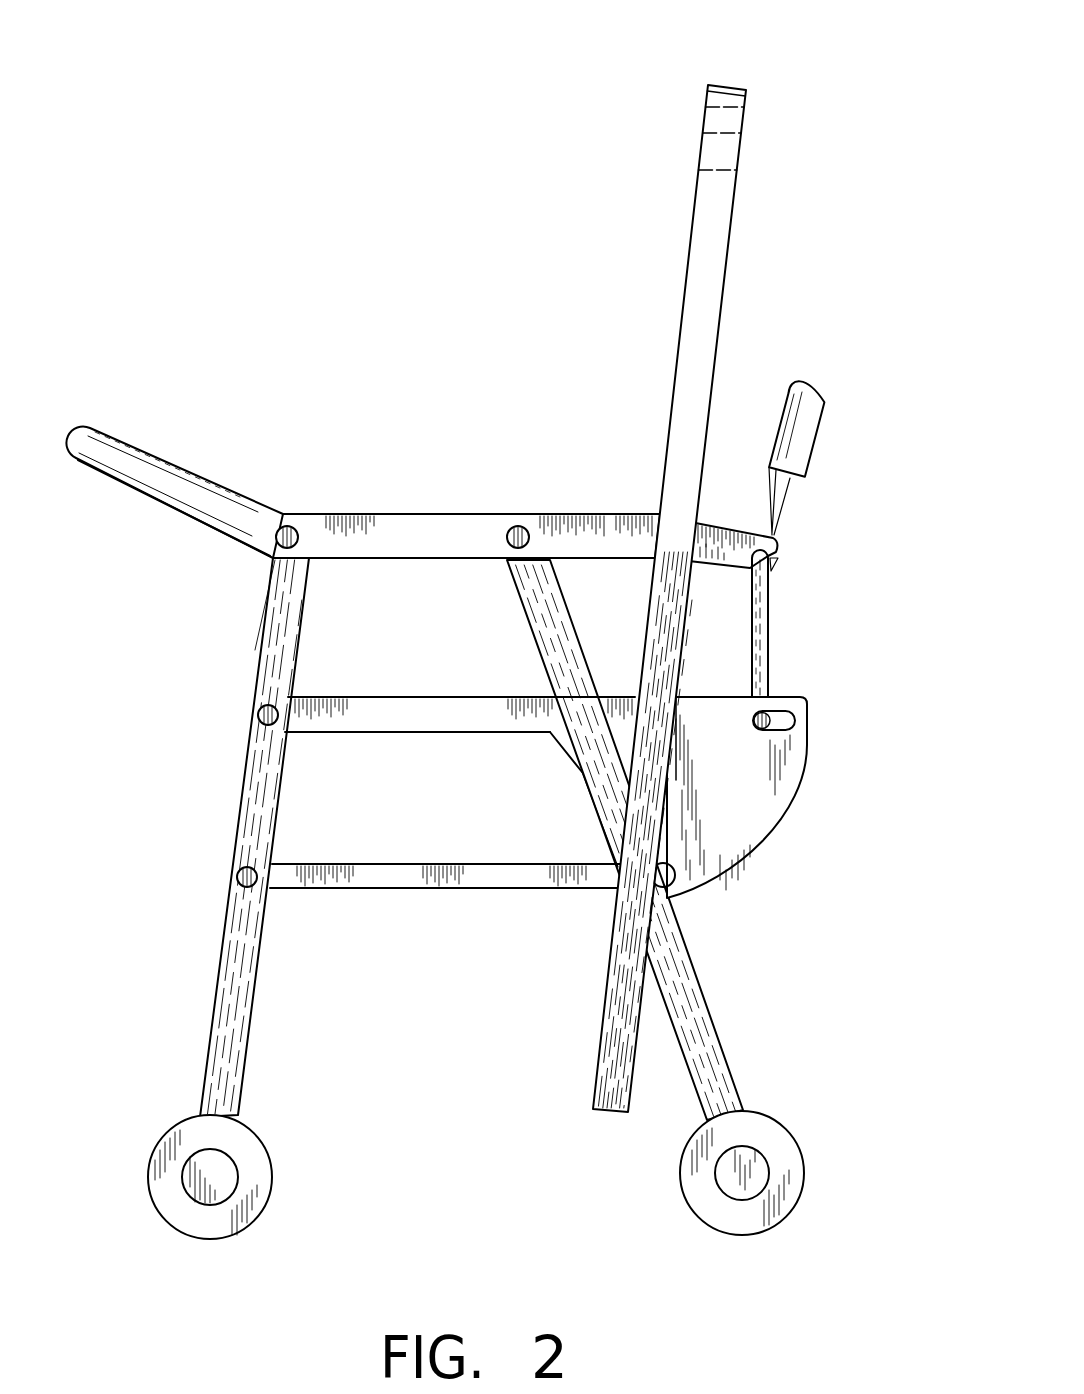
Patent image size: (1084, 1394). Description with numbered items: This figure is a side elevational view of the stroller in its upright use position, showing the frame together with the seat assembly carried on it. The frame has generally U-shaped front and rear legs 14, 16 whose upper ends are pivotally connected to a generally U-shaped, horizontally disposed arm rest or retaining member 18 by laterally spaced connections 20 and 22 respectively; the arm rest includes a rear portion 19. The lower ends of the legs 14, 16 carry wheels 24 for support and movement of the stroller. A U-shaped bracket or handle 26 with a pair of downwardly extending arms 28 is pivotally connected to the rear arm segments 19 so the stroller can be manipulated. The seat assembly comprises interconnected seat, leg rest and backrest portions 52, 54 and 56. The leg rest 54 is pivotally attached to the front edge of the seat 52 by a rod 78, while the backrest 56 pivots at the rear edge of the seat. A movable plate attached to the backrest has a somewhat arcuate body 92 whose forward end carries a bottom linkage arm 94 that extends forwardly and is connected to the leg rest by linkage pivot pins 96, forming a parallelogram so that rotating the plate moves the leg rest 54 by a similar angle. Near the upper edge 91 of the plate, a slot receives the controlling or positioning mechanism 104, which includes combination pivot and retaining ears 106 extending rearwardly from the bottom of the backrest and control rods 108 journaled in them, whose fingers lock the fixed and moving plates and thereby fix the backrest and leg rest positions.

The front leg 14 is at (212, 1018).
The rear leg 16 is at (703, 997).
The arm rest or retaining member 18 is at (162, 455).
The rear portion of the arm rest 19 is at (650, 510).
The connection 20 is at (280, 513).
The connection 22 is at (515, 525).
The wheel 24 is at (247, 1223).
The bracket or handle 26 is at (736, 86).
The downwardly extending arm 28 is at (718, 139).
The seat portion 52 is at (388, 716).
The leg rest portion 54 is at (257, 978).
The backrest portion 56 is at (727, 265).
The rod 78 is at (263, 727).
The upper edge of the movable plate 91 is at (785, 693).
The arcuate body 92 is at (727, 785).
The bottom linkage arm 94 is at (512, 870).
The linkage pivot pin 96 is at (230, 897).
The controlling or positioning mechanism 104 is at (813, 460).
The combination pivot and retaining ear 106 is at (717, 523).
The control rod 108 is at (765, 606).